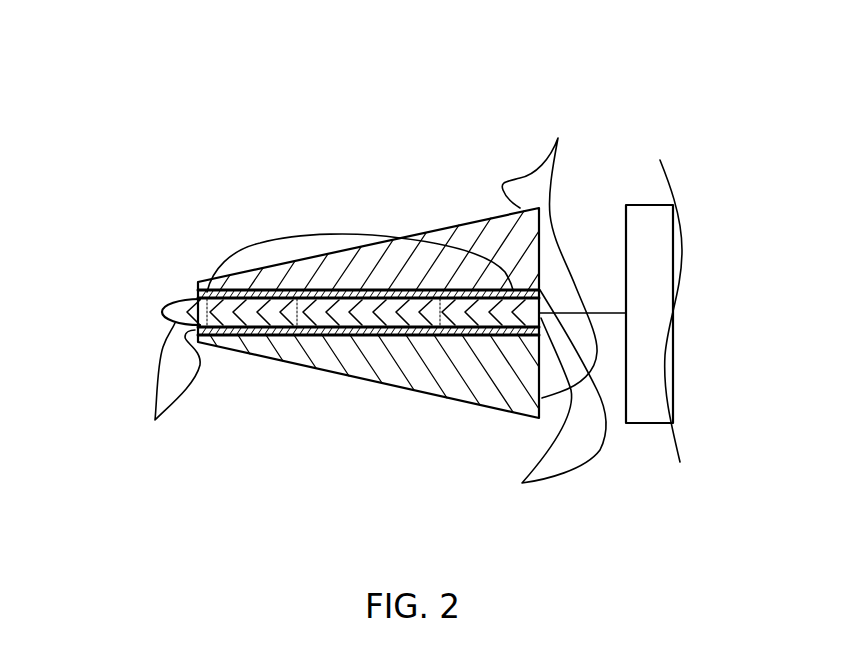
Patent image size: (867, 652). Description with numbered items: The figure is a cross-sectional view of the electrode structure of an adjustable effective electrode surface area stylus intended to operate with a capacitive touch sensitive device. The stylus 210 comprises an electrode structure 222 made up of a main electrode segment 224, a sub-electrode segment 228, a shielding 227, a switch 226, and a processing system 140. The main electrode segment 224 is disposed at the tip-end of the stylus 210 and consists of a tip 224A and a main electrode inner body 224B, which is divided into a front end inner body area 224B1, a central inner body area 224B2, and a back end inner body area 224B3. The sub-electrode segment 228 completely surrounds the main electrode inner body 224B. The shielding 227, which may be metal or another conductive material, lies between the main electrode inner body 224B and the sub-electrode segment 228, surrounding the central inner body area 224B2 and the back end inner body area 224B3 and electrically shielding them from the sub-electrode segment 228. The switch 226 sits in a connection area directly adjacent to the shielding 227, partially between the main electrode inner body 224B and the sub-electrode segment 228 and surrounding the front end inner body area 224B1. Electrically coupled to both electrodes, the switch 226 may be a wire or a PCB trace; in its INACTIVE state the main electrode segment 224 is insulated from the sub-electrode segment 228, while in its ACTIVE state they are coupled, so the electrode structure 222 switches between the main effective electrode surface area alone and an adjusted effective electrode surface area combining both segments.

The stylus 210 is at (257, 128).
The electrode structure 222 is at (482, 180).
The main electrode segment 224 is at (146, 314).
The tip 224A is at (184, 298).
The main electrode inner body 224B is at (410, 237).
The front end inner body area 224B1 is at (268, 355).
The central inner body area 224B2 is at (323, 368).
The back end inner body area 224B3 is at (437, 328).
The switch 226 is at (164, 398).
The shielding 227 is at (537, 399).
The sub-electrode segment 228 is at (549, 248).
The processing system 140 is at (633, 205).